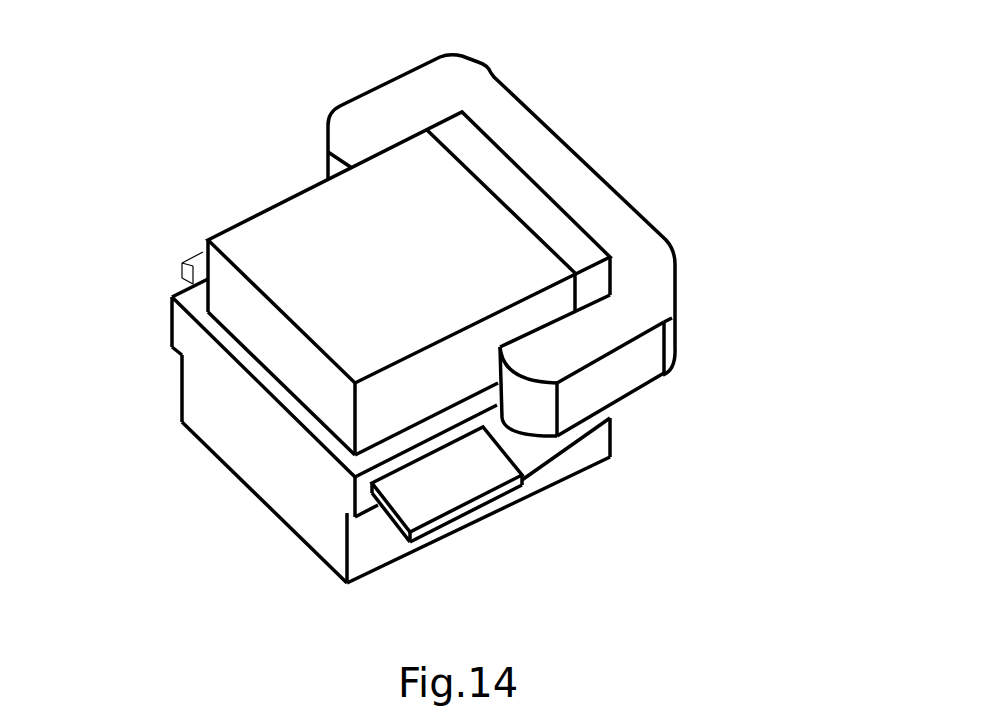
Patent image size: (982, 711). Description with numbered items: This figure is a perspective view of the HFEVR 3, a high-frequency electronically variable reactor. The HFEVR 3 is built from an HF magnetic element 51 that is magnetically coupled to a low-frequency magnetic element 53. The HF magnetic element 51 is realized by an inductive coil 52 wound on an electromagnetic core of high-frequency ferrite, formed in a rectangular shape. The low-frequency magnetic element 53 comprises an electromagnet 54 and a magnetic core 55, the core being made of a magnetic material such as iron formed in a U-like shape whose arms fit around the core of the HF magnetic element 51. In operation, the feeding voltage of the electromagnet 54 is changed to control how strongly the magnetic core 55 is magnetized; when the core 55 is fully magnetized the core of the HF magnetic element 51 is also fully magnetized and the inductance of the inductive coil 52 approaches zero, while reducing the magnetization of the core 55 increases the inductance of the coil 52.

The HFEVR 3 is at (268, 64).
The HF magnetic element 51 is at (210, 367).
The inductive coil 52 is at (388, 493).
The low-frequency magnetic element 53 is at (592, 165).
The electromagnet 54 is at (645, 283).
The magnetic core 55 is at (337, 240).